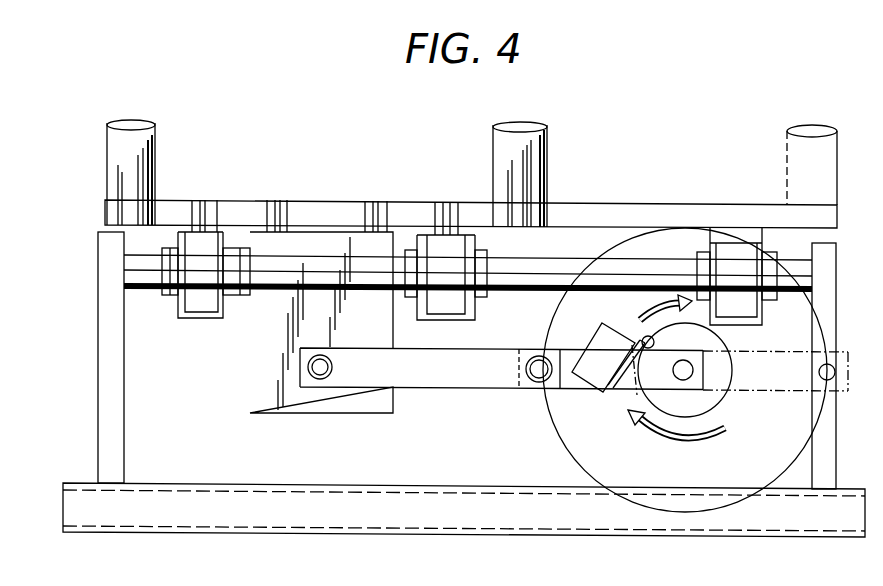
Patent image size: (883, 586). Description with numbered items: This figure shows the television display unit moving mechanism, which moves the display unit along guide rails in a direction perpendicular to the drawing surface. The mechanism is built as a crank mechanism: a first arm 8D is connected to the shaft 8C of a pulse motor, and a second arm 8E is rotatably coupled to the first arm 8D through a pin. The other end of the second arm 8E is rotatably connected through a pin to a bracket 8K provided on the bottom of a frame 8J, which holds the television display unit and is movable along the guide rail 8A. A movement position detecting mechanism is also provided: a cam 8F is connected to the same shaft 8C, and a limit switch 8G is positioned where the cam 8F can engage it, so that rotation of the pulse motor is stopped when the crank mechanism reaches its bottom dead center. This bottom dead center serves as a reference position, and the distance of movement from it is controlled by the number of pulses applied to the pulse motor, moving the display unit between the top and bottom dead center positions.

The frame 8J is at (238, 207).
The bracket 8K is at (251, 366).
The guide rail 8A is at (523, 289).
The second arm 8E is at (423, 385).
The first arm 8D is at (565, 388).
The shaft 8C is at (688, 378).
The limit switch 8G is at (592, 338).
The cam 8F is at (640, 392).